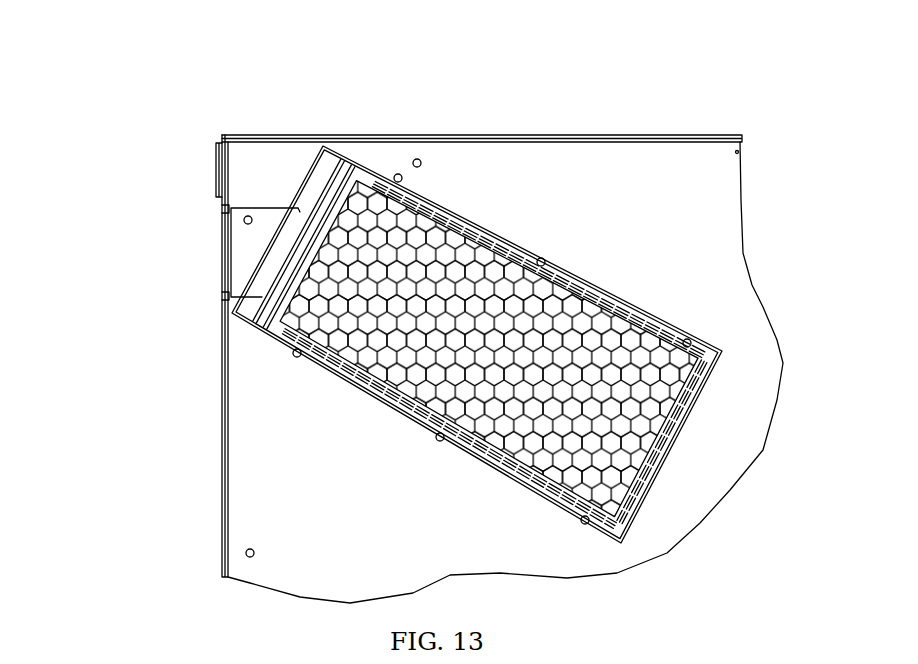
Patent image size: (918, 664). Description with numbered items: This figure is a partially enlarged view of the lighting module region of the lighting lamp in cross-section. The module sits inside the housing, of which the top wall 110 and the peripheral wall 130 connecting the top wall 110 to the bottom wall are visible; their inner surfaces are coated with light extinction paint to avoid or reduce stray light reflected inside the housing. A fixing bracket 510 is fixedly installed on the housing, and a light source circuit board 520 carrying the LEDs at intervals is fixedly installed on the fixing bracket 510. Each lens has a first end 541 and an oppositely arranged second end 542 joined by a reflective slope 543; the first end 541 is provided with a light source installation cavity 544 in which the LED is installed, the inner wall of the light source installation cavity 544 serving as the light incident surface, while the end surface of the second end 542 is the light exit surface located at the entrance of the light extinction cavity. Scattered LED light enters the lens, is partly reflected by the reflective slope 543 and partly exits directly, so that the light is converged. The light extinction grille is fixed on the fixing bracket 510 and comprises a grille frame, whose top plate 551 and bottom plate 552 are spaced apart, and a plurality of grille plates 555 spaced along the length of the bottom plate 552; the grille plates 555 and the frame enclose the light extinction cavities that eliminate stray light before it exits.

The top wall 110 is at (517, 136).
The peripheral wall 130 is at (224, 395).
The fixing bracket 510 is at (224, 182).
The light source circuit board 520 is at (322, 146).
The first end 541 is at (292, 200).
The second end 542 is at (350, 165).
The reflective slope 543 is at (288, 270).
The light source installation cavity 544 is at (300, 237).
The top plate 551 is at (650, 337).
The bottom plate 552 is at (417, 423).
The grille plates 555 is at (553, 316).